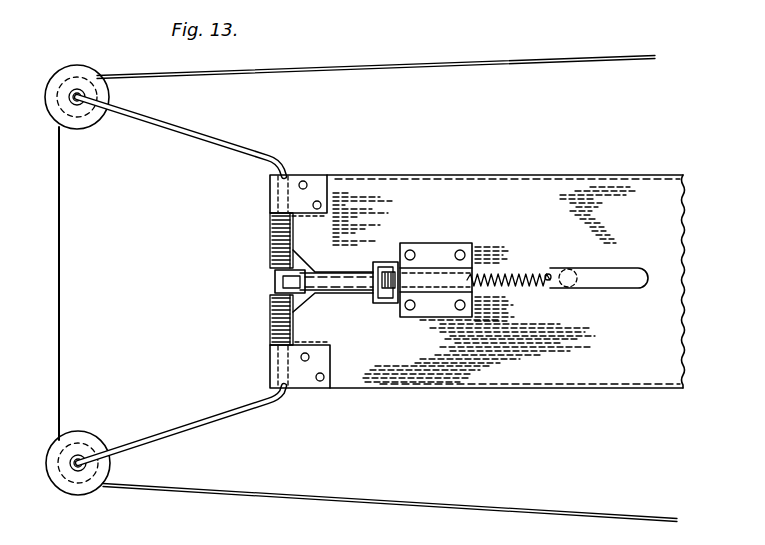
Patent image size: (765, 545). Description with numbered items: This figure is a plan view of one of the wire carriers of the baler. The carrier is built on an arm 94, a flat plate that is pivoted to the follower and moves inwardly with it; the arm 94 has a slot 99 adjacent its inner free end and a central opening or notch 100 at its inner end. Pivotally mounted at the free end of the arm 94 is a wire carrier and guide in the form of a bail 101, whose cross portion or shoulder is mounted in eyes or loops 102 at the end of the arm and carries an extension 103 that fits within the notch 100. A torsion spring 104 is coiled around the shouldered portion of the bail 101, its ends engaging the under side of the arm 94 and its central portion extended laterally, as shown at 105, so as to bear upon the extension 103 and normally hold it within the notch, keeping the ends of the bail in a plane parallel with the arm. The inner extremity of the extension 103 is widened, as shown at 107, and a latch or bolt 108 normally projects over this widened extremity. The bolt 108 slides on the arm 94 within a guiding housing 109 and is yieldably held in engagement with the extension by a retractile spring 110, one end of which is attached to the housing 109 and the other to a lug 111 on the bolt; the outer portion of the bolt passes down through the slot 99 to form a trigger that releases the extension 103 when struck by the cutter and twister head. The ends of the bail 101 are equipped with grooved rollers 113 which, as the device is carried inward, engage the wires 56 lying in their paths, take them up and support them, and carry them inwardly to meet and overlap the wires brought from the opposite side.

The wires 56 is at (417, 502).
The arm 94 is at (506, 281).
The slot 99 is at (617, 278).
The opening or notch 100 is at (337, 272).
The bail 101 is at (222, 143).
The eyes or loops 102 is at (283, 185).
The extension 103 is at (338, 282).
The torsion spring 104 is at (272, 240).
The laterally extended central portion 105 is at (303, 268).
The widened extremity 107 is at (388, 258).
The latch or bolt 108 is at (387, 303).
The guiding housing 109 is at (440, 277).
The retractile spring 110 is at (515, 290).
The lug 111 is at (548, 272).
The grooved rollers 113 is at (90, 122).